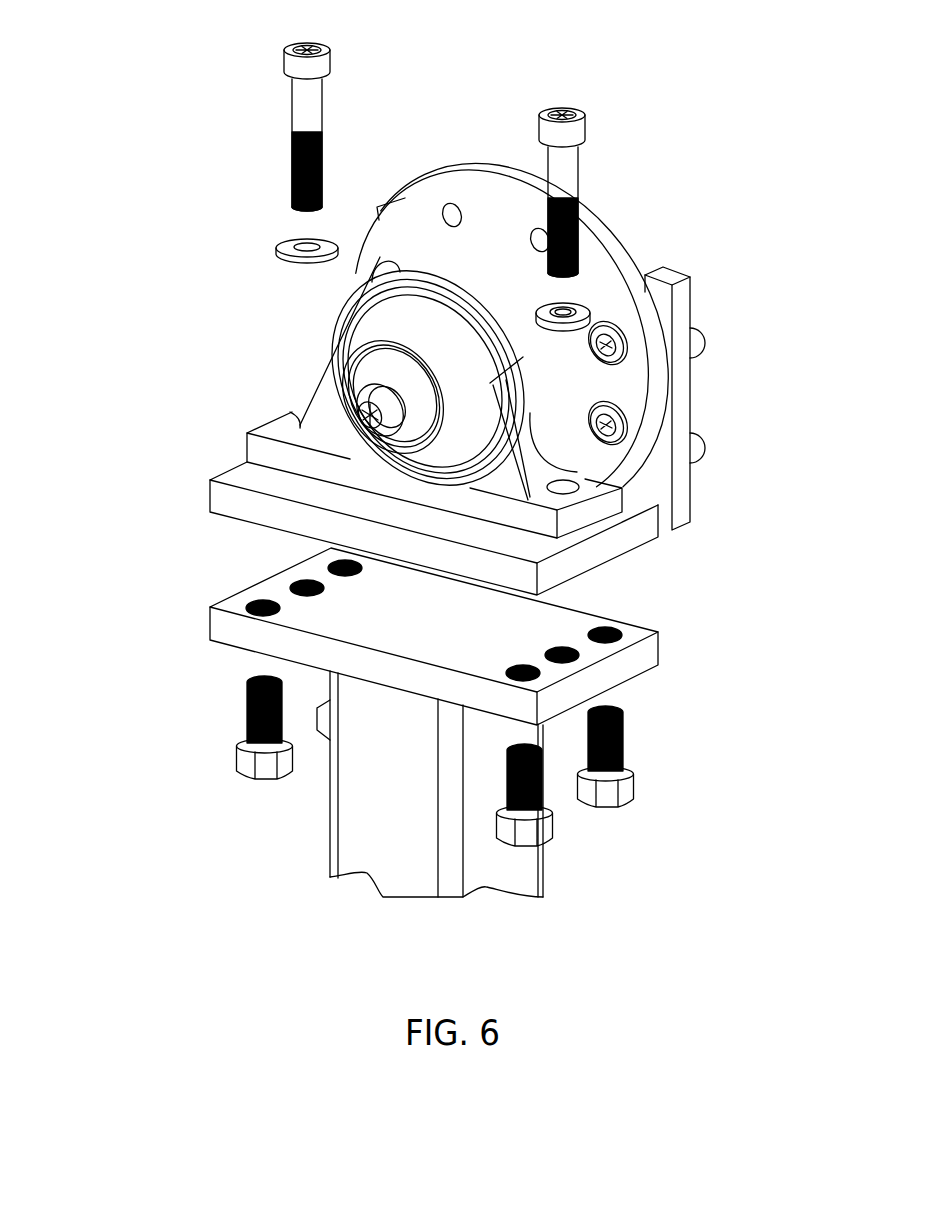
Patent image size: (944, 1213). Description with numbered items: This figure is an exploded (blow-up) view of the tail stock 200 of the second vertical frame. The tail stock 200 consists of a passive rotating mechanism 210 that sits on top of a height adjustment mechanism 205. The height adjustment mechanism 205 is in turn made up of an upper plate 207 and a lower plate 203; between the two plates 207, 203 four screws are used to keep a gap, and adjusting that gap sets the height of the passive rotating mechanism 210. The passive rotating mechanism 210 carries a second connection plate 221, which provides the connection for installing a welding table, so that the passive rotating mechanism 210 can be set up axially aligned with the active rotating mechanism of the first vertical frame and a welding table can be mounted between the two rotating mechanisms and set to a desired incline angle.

The tail stock 200 is at (777, 838).
The lower plate 203 is at (650, 669).
The height adjustment mechanism 205 is at (168, 470).
The upper plate 207 is at (628, 548).
The passive rotating mechanism 210 is at (167, 213).
The second connection plate 221 is at (650, 272).